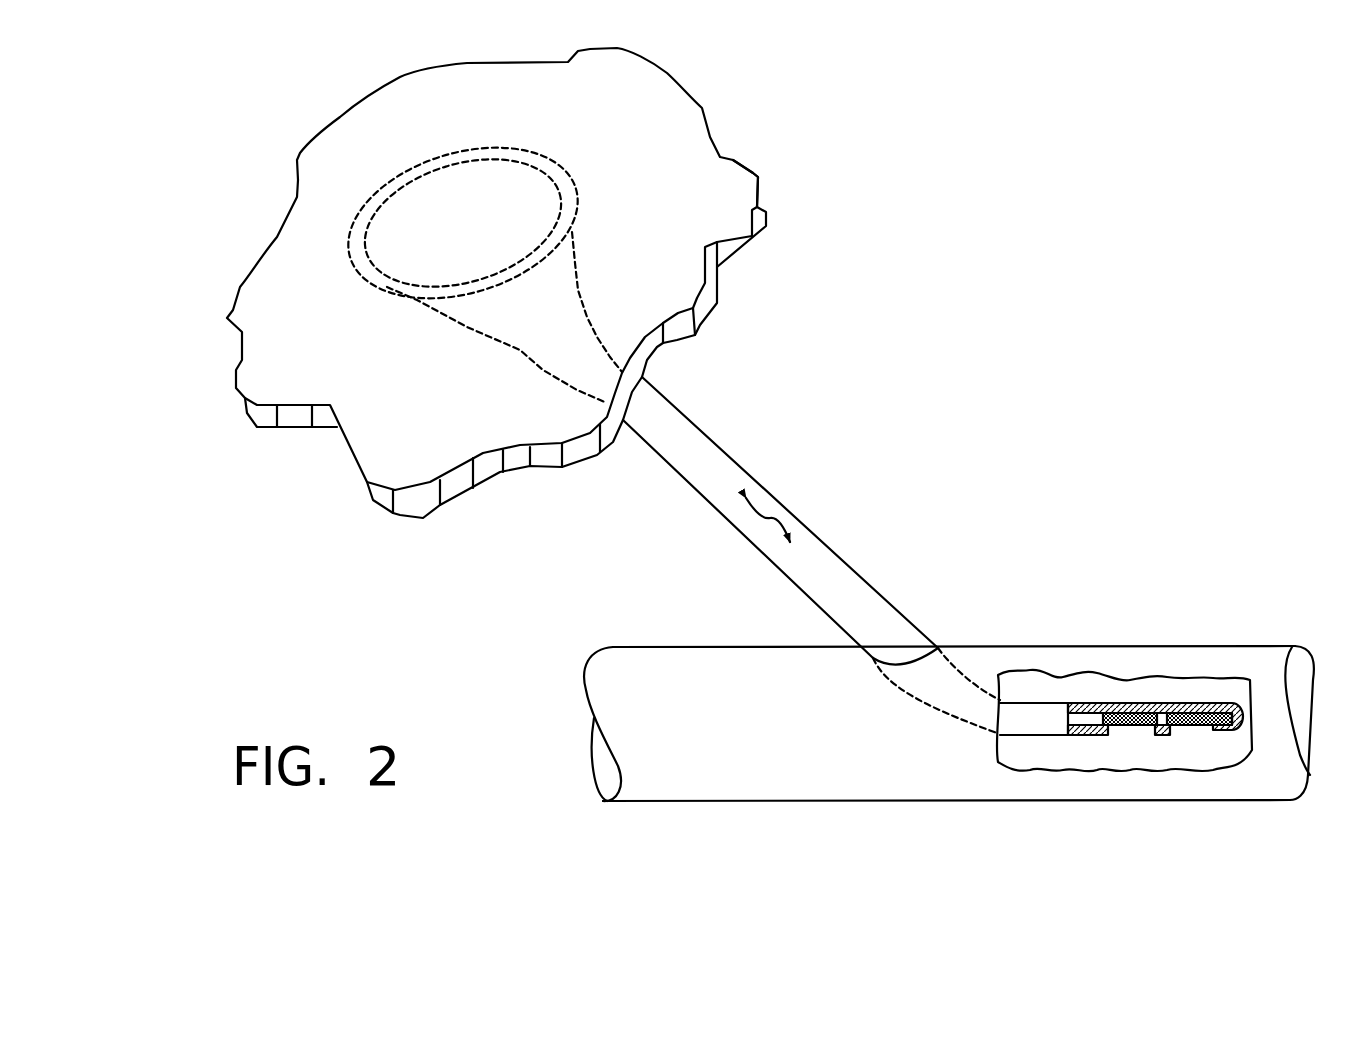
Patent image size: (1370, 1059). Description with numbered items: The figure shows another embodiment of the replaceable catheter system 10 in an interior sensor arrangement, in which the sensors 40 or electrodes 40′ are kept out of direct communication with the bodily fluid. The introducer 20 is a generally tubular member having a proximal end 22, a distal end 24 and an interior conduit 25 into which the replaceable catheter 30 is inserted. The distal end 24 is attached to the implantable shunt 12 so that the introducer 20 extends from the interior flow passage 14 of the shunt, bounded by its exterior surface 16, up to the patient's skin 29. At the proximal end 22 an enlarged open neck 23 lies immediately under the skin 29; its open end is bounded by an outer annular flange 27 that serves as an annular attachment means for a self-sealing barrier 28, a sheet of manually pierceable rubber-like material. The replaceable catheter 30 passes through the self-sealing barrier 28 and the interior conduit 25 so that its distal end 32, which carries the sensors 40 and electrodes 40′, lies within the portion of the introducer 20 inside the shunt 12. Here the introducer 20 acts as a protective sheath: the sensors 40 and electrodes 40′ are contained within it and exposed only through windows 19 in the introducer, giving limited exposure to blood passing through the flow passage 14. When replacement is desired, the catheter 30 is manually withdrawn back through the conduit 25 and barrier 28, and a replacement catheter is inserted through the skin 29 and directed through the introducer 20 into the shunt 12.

The replaceable catheter system 10 is at (172, 164).
The implantable shunt 12 is at (847, 792).
The interior flow passage 14 is at (1020, 752).
The exterior surface 16 is at (1253, 646).
The windows 19 is at (1132, 732).
The introducer 20 is at (712, 440).
The proximal end 22 is at (444, 208).
The enlarged open neck 23 is at (467, 327).
The distal end 24 is at (1247, 714).
The interior conduit 25 is at (777, 510).
The outer annular flange 27 is at (570, 167).
The self-sealing barrier 28 is at (398, 247).
The patient's skin 29 is at (743, 189).
The replaceable catheter 30 is at (1080, 717).
The distal end 32 is at (1247, 719).
The sensors 40 is at (1243, 710).
The electrodes 40′ is at (1118, 712).